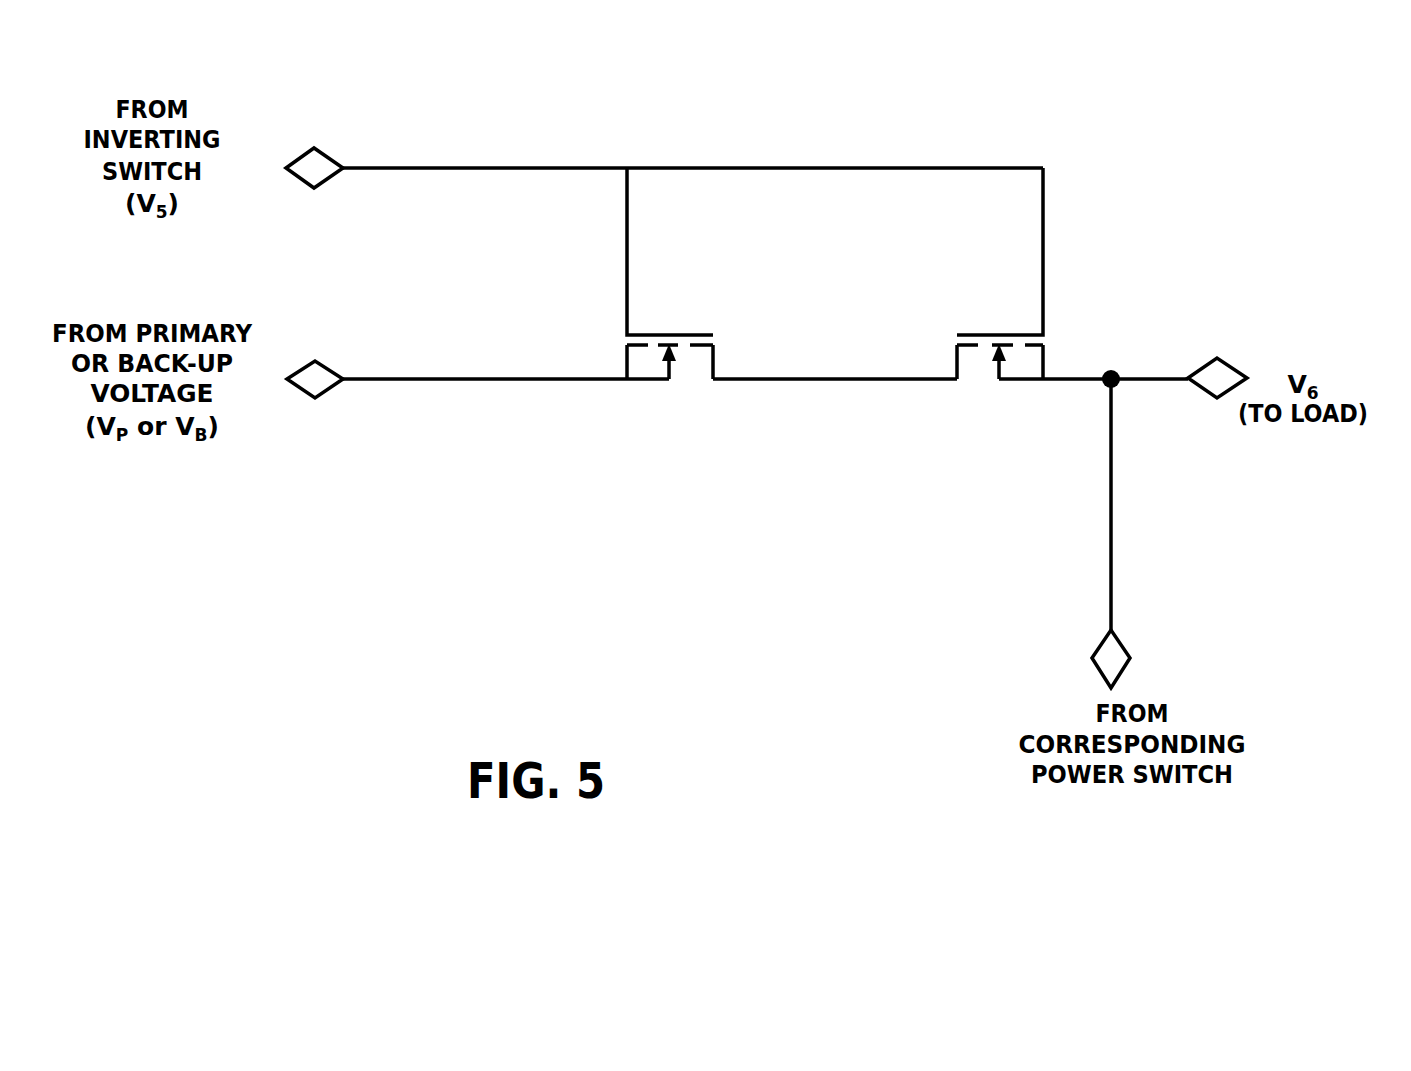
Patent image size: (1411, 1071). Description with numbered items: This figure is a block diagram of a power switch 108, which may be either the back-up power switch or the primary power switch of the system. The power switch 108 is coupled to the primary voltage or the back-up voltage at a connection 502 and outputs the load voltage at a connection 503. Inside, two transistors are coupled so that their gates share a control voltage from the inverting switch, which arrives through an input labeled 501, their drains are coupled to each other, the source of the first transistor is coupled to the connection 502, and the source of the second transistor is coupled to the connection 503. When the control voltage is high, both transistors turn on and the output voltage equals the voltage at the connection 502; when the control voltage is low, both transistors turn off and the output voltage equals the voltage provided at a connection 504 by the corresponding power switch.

The power switch 108 is at (1180, 90).
The input from inverting switch (V5) 501 is at (312, 160).
The connection 502 is at (316, 371).
The connection 503 is at (1217, 360).
The connection 504 is at (1128, 660).